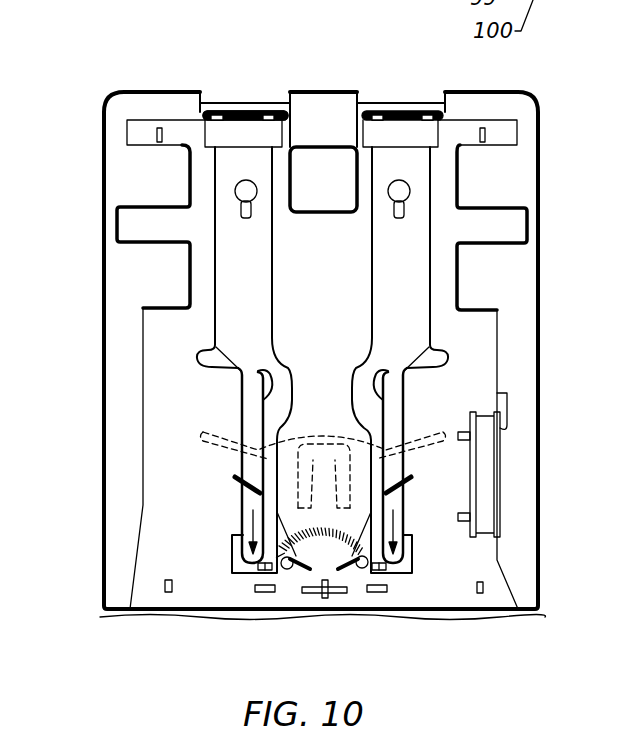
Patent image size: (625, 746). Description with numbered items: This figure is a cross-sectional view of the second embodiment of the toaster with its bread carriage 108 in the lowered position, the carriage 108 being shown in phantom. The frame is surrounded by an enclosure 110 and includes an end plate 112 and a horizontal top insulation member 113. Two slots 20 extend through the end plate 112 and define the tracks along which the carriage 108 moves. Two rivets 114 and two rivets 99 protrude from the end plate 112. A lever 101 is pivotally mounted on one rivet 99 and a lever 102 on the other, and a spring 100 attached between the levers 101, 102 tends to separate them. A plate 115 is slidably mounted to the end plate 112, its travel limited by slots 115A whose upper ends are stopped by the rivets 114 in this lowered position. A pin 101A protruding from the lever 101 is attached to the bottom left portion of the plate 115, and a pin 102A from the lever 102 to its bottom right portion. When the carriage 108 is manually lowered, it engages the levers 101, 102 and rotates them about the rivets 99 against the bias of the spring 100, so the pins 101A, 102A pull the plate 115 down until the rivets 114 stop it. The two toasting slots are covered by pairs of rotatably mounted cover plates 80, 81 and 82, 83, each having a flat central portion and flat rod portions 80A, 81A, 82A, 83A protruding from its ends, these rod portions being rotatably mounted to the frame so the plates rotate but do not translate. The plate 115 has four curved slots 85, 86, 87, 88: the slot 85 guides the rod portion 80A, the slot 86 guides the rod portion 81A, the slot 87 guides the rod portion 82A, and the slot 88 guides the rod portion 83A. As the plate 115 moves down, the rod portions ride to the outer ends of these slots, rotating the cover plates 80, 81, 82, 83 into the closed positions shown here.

The slots 20 is at (242, 415).
The cover plate 80 is at (225, 110).
The rod portion 80A is at (213, 120).
The cover plate 81 is at (272, 114).
The rod portion 81A is at (270, 122).
The cover plate 82 is at (393, 110).
The rod portion 82A is at (429, 121).
The cover plate 83 is at (444, 97).
The rod portion 83A is at (380, 119).
The curved slot 85 is at (206, 112).
The curved slot 86 is at (267, 110).
The curved slot 87 is at (378, 113).
The curved slot 88 is at (418, 112).
The rivets 99 is at (286, 569).
The spring 100 is at (352, 569).
The lever 101 is at (237, 478).
The pin 101A is at (262, 572).
The lever 102 is at (414, 478).
The pin 102A is at (393, 571).
The bread carriage 108 is at (332, 432).
The enclosure 110 is at (104, 373).
The end plate 112 is at (183, 207).
The horizontal top insulation member 113 is at (200, 100).
The rivets 114 is at (253, 192).
The plate 115 is at (410, 307).
The slots 115A is at (251, 217).